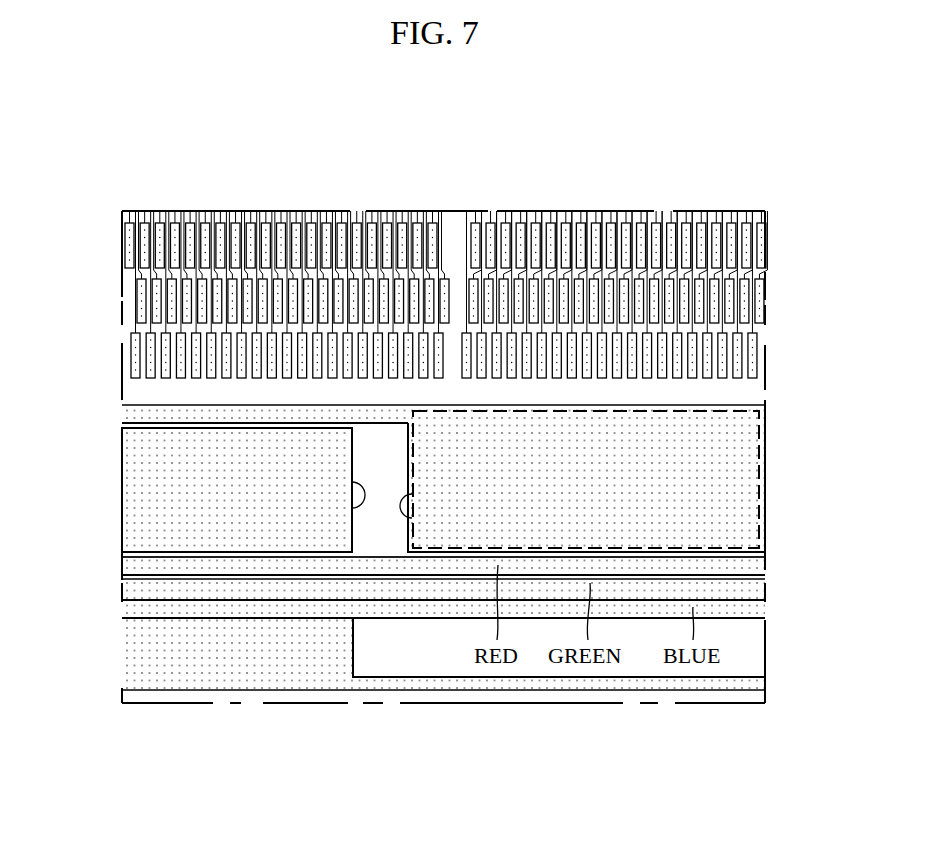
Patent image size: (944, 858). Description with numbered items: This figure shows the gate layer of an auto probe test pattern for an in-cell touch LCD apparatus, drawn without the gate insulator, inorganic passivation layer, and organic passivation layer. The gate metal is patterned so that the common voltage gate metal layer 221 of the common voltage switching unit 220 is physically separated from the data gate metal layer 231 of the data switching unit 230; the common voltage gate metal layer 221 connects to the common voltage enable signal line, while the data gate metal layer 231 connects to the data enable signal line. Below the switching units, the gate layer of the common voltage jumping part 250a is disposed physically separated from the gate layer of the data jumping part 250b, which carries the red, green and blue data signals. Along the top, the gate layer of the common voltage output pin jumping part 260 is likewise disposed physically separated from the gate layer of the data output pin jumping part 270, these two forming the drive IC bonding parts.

The common voltage switching unit 220 is at (352, 482).
The common voltage gate metal layer 221 is at (170, 478).
The data switching unit 230 is at (412, 494).
The data gate metal layer 231 is at (728, 467).
The common voltage jumping part 250a is at (188, 670).
The data jumping part 250b is at (775, 563).
The common voltage output pin jumping part 260 is at (290, 216).
The data output pin jumping part 270 is at (632, 216).